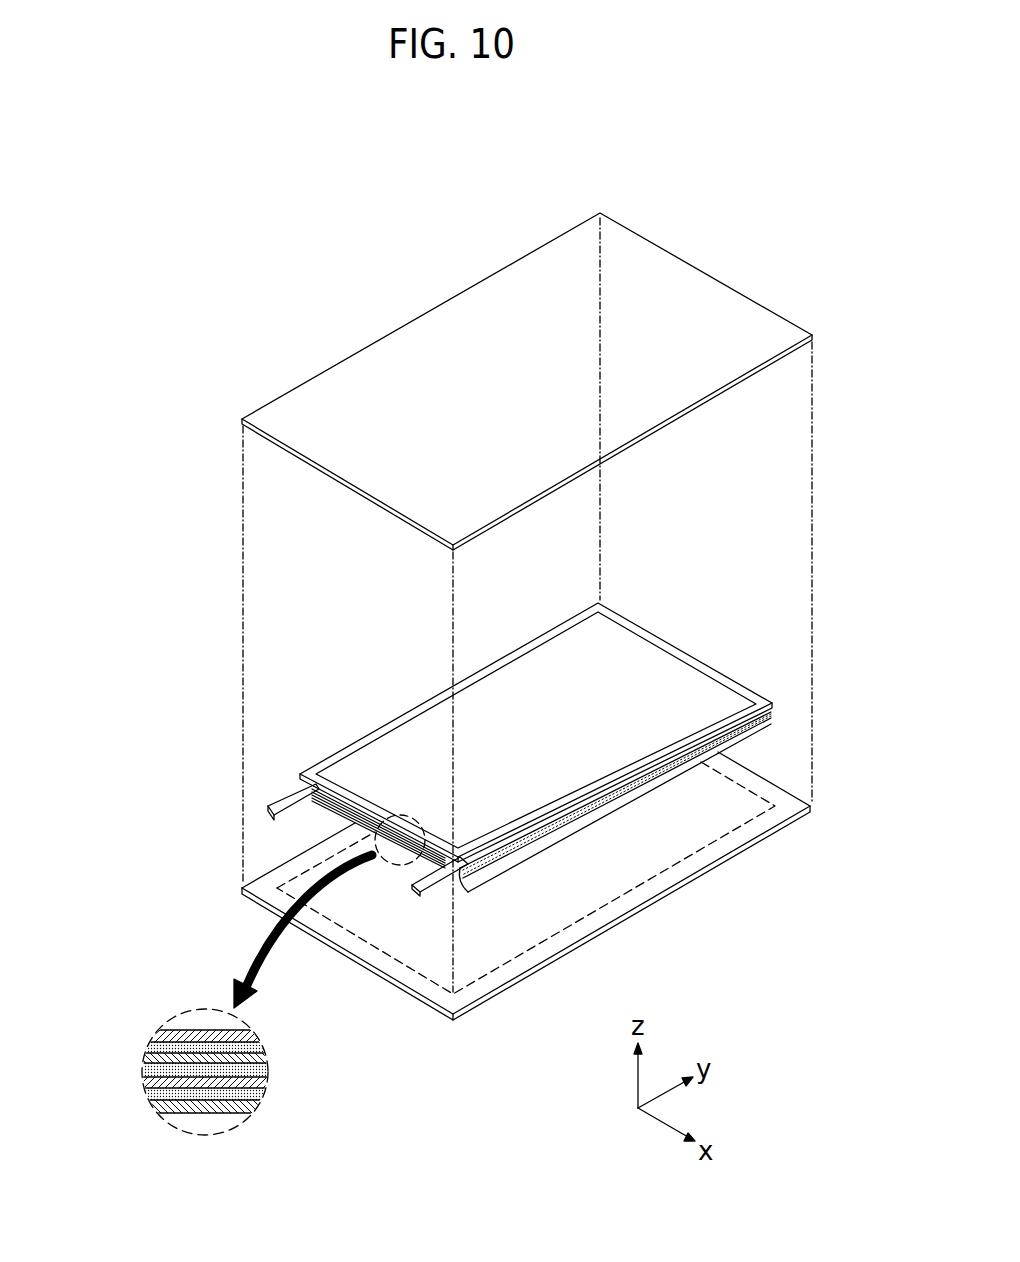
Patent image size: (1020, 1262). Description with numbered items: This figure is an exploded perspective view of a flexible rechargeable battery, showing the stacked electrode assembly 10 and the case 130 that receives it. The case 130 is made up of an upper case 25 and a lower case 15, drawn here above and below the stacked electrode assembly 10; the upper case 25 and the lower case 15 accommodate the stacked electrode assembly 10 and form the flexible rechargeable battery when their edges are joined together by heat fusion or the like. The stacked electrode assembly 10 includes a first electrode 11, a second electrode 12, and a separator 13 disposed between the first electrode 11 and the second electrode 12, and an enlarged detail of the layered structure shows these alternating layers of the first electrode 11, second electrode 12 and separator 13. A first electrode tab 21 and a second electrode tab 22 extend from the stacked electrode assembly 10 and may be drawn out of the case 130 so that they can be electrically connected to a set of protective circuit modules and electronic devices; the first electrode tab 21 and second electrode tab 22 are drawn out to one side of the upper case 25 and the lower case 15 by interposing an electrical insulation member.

The stacked electrode assembly 10 is at (392, 714).
The first electrode 11 is at (258, 1058).
The second electrode 12 is at (250, 1035).
The separator 13 is at (148, 1073).
The lower case 15 is at (730, 871).
The first electrode tab 21 is at (418, 893).
The second electrode tab 22 is at (285, 800).
The upper case 25 is at (645, 230).
The case 130 is at (794, 253).